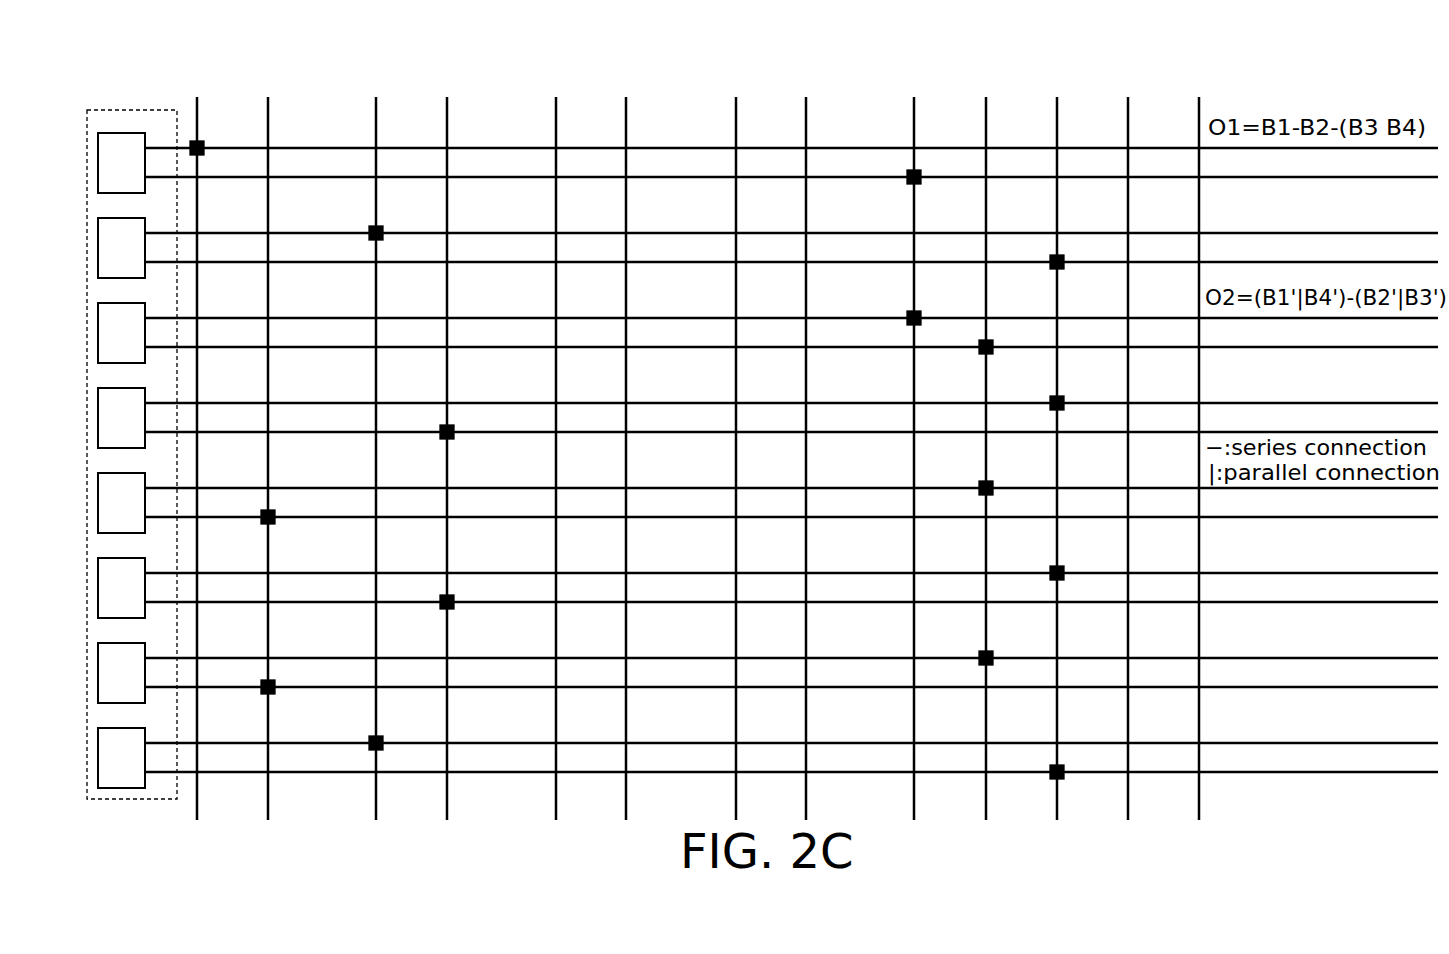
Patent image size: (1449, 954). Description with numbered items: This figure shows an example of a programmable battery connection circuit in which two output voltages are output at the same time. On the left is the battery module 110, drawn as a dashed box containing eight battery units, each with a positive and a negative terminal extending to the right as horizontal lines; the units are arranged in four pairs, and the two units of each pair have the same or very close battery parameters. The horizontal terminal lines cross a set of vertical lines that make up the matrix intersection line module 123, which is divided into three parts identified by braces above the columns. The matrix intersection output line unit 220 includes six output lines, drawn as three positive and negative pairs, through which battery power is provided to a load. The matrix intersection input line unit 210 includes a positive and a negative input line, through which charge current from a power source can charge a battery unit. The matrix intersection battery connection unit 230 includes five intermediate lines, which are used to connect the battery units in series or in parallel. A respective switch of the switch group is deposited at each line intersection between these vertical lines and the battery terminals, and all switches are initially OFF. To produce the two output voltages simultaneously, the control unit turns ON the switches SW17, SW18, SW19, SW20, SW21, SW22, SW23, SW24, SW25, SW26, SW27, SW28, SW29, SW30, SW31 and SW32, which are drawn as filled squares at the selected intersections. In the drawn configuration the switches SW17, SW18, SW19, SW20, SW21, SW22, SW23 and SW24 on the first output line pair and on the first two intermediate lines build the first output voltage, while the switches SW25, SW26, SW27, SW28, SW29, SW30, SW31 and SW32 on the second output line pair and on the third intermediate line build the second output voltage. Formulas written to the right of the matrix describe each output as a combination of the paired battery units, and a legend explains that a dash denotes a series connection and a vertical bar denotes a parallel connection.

The battery module 110 is at (135, 108).
The matrix intersection line module 123 is at (1077, 34).
The matrix intersection output line unit 220 is at (647, 73).
The matrix intersection input line unit 210 is at (710, 73).
The matrix intersection battery connection unit 230 is at (1220, 73).
The switch SW17 is at (224, 129).
The switch SW18 is at (273, 522).
The switch SW19 is at (273, 692).
The switch SW20 is at (919, 182).
The switch SW21 is at (909, 313).
The switch SW22 is at (981, 352).
The switch SW23 is at (1013, 469).
The switch SW24 is at (1013, 639).
The switch SW25 is at (403, 214).
The switch SW26 is at (452, 437).
The switch SW27 is at (452, 607).
The switch SW28 is at (403, 724).
The switch SW29 is at (1062, 267).
The switch SW30 is at (1084, 384).
The switch SW31 is at (1084, 554).
The switch SW32 is at (1062, 777).